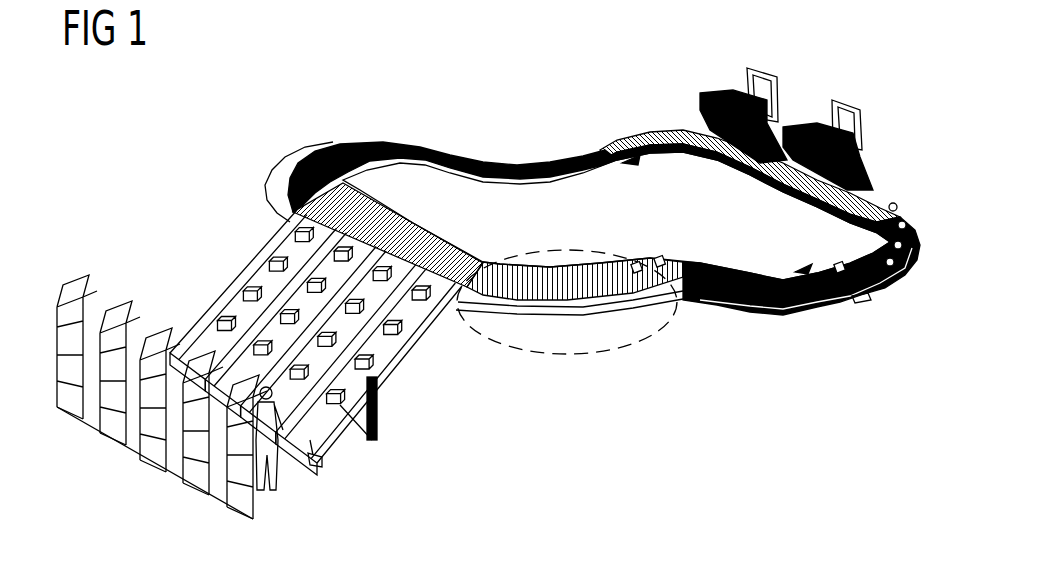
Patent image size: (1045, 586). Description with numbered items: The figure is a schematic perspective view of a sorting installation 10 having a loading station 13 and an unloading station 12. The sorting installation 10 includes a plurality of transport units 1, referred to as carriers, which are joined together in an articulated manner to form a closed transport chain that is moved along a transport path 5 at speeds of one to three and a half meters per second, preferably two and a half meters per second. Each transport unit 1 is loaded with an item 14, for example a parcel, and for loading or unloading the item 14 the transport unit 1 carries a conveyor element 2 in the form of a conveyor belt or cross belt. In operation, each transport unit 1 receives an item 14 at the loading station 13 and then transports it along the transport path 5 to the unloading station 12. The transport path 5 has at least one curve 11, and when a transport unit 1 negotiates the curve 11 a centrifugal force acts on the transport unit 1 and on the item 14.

The transport unit 1 is at (514, 318).
The conveyor element 2 is at (532, 270).
The transport path 5 is at (773, 306).
The sorting installation 10 is at (420, 430).
The curve 11 is at (562, 357).
The unloading station 12 is at (323, 478).
The loading station 13 is at (858, 97).
The item 14 is at (862, 303).